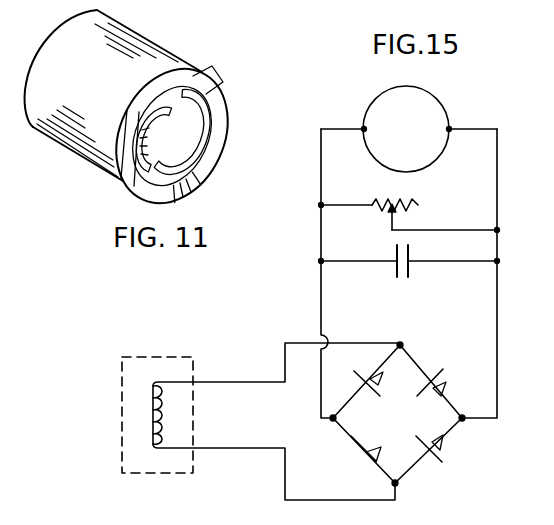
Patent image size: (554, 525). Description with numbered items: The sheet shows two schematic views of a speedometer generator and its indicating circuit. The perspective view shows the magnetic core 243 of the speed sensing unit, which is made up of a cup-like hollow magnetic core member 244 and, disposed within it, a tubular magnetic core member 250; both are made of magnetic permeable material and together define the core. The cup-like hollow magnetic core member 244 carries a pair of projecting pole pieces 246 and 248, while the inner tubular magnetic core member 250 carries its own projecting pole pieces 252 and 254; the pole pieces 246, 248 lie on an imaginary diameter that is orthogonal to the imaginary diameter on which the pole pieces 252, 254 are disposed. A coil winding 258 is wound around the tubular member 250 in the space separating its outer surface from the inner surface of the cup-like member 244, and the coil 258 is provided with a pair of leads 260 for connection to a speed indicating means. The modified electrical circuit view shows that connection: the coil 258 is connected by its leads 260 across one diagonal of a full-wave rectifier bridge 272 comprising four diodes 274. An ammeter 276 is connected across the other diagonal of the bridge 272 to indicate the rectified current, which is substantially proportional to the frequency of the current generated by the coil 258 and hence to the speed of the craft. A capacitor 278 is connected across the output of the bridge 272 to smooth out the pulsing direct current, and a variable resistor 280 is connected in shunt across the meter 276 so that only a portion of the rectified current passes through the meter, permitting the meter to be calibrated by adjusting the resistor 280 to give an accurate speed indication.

In FIG. 11, the magnetic core 243 is at (90, 167).
In FIG. 11, the cup-like hollow magnetic core member 244 is at (147, 50).
In FIG. 11, the pole piece 246 is at (203, 72).
In FIG. 11, the pole piece 248 is at (206, 196).
In FIG. 11, the tubular magnetic core member 250 is at (152, 128).
In FIG. 11, the pole piece 252 is at (182, 131).
In FIG. 11, the pole piece 254 is at (186, 136).
In FIG. 11, the coil winding 258 is at (128, 132).
In FIG. 15, the coil winding 258 is at (135, 415).
In FIG. 15, the leads 260 is at (276, 421).
In FIG. 15, the full-wave rectifier bridge 272 is at (378, 414).
In FIG. 15, the diodes 274 is at (411, 419).
In FIG. 15, the ammeter 276 is at (407, 115).
In FIG. 15, the capacitor 278 is at (409, 268).
In FIG. 15, the variable resistor 280 is at (409, 201).